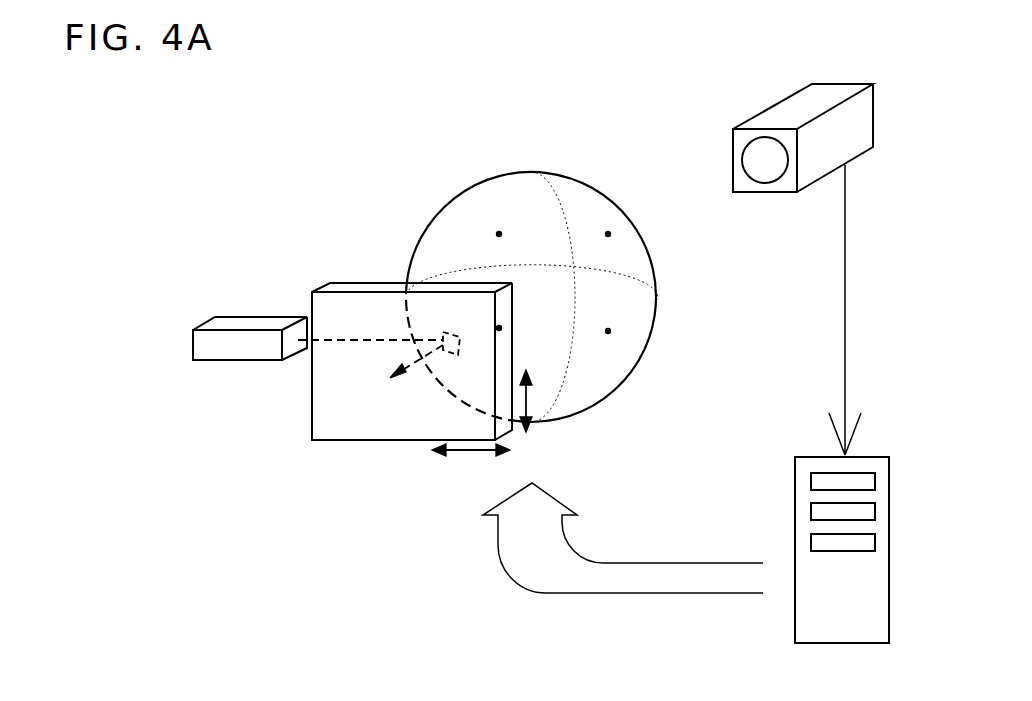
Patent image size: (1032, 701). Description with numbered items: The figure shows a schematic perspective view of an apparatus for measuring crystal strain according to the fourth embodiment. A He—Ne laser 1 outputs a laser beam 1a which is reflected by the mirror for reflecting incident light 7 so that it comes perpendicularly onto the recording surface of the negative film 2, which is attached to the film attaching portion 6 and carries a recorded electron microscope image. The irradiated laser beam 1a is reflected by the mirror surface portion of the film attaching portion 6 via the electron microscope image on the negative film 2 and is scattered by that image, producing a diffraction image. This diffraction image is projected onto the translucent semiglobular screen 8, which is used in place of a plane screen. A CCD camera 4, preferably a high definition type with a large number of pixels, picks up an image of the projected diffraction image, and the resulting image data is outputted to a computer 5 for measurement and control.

The He—Ne laser 1 is at (230, 353).
The laser beam 1a is at (337, 340).
The negative film 2 is at (347, 282).
The CCD camera 4 is at (767, 120).
The computer 5 is at (800, 502).
The film attaching portion 6 is at (392, 428).
The mirror for reflecting incident light 7 is at (441, 332).
The translucent semiglobular screen 8 is at (460, 205).